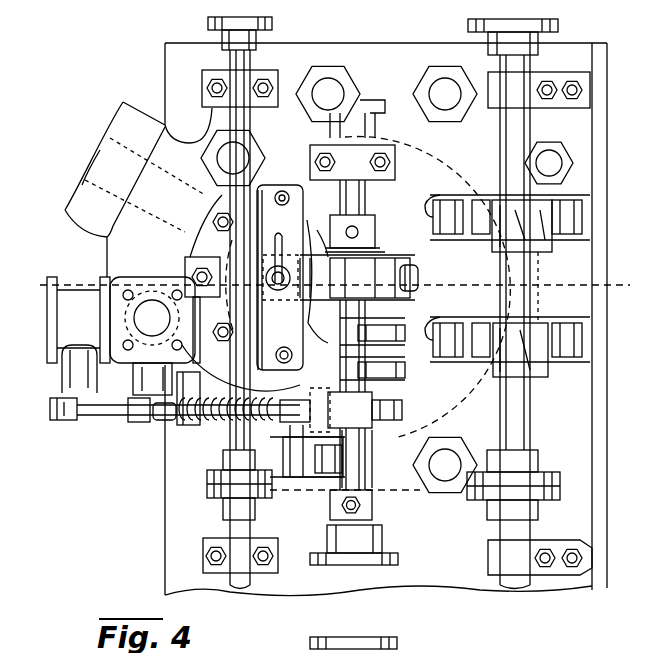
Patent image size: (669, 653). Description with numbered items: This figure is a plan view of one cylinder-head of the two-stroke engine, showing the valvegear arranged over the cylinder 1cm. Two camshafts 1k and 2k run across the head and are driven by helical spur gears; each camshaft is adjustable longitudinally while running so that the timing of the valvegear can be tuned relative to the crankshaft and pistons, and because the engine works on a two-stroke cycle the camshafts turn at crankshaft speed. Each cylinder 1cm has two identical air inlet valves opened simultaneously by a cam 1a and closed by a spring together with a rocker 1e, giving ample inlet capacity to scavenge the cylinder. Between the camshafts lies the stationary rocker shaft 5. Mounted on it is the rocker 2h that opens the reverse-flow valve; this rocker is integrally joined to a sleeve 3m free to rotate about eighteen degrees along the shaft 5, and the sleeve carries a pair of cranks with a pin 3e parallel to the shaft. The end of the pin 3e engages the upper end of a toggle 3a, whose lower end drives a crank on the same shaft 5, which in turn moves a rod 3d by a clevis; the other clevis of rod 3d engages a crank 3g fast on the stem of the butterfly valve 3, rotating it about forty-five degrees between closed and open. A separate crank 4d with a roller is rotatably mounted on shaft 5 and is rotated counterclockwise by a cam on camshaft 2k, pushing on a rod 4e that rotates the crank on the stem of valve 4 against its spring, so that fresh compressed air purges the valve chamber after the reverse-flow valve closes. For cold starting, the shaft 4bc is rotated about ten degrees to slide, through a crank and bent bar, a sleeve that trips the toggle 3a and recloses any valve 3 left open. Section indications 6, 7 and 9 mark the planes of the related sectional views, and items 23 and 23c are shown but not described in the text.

The cam 1a is at (540, 330).
The cylinder 1cm is at (420, 136).
The rocker 1e is at (468, 208).
The camshaft 1k is at (505, 132).
The rocker 2h is at (378, 275).
The camshaft 2k is at (366, 195).
The pin 23 is at (286, 300).
The slide plate 23c is at (297, 186).
The valve 3 is at (77, 315).
The toggle 3a is at (378, 405).
The rod 3d is at (110, 418).
The pin 3e is at (398, 340).
The crank 3g is at (68, 422).
The sleeve 3m is at (368, 318).
The valve 4 is at (152, 315).
The shaft 4bc is at (240, 194).
The crank 4d is at (295, 440).
The rod 4e is at (166, 424).
The stationary rocker shaft 5 is at (366, 218).
The section line 6- 6 is at (626, 268).
The section line 7- 7 is at (242, 172).
The section line 9- 9 is at (411, 484).